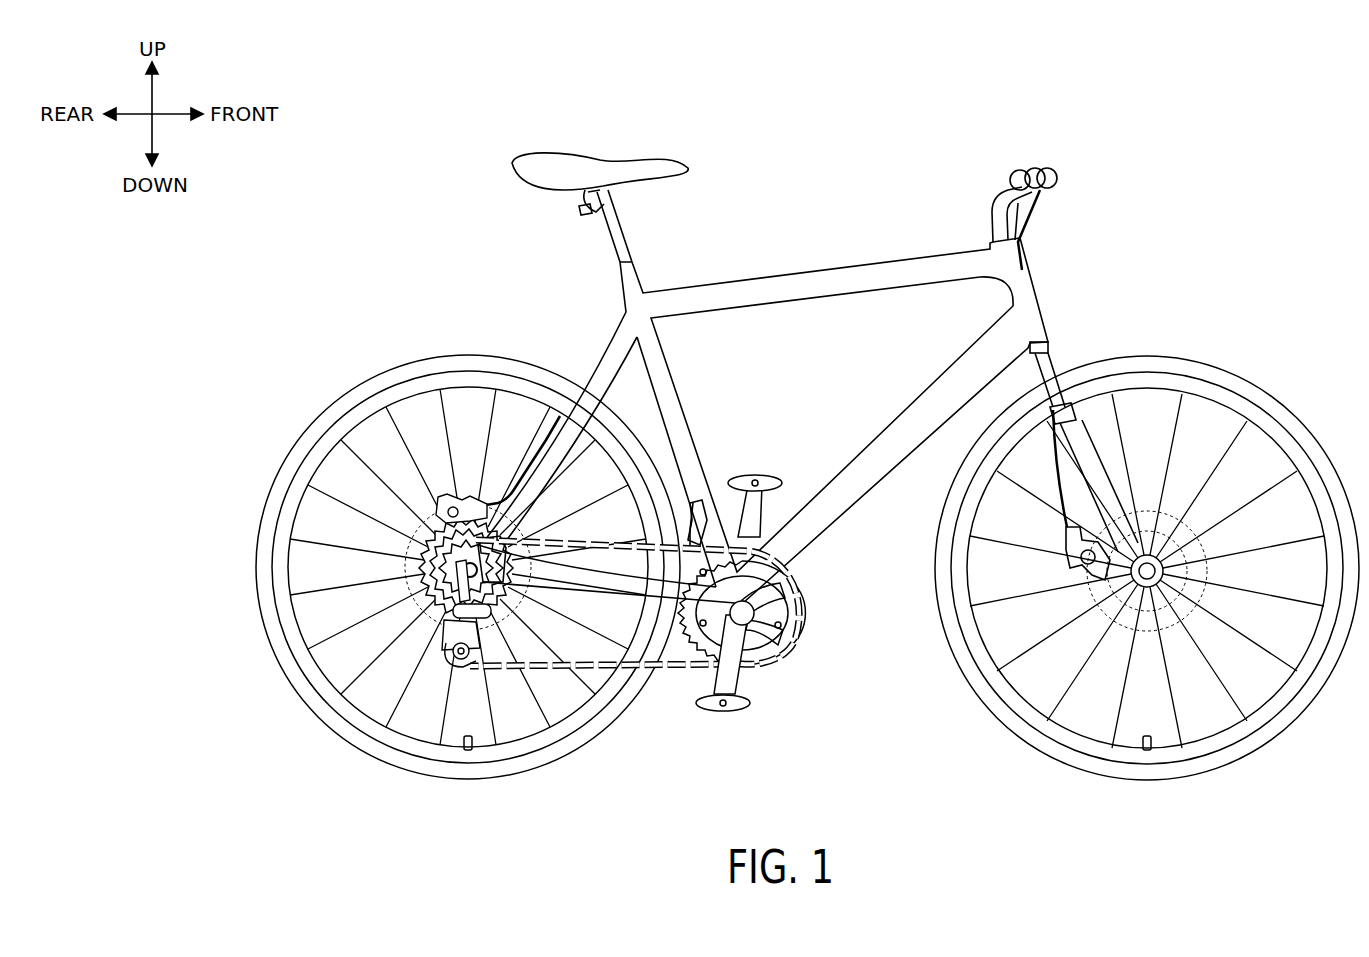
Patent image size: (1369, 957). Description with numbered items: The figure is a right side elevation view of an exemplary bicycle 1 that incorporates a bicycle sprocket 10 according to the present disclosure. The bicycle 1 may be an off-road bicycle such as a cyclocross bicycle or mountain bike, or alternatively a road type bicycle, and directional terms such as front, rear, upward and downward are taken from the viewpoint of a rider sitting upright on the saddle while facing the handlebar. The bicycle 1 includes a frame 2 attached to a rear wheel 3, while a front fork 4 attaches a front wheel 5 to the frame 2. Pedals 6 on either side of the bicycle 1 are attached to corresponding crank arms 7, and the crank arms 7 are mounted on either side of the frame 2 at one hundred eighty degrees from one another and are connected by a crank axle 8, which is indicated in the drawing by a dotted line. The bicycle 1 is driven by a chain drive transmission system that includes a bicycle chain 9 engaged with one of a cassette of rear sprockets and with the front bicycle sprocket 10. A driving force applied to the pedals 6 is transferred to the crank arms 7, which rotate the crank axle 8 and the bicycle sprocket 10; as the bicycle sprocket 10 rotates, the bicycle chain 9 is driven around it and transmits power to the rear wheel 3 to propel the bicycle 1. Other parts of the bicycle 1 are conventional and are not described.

The bicycle 1 is at (1303, 93).
The frame 2 is at (927, 393).
The rear wheel 3 is at (352, 388).
The front fork 4 is at (1058, 356).
The front wheel 5 is at (1288, 408).
The pedals 6 is at (723, 711).
The crank arms 7 is at (742, 683).
The crank axle 8 is at (757, 600).
The bicycle chain 9 is at (588, 666).
The bicycle sprocket 10 is at (814, 576).